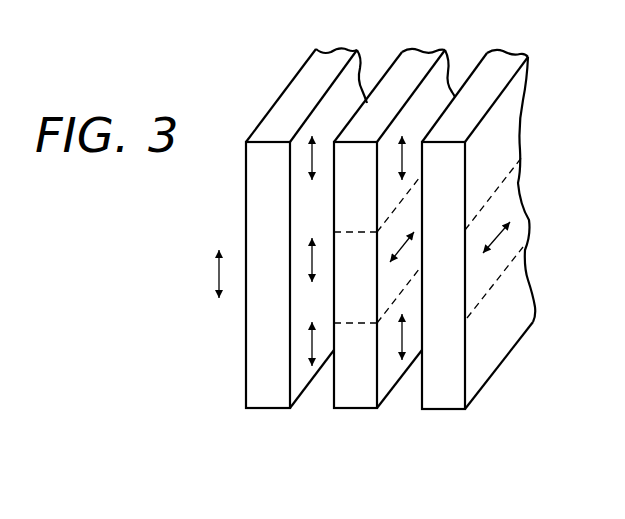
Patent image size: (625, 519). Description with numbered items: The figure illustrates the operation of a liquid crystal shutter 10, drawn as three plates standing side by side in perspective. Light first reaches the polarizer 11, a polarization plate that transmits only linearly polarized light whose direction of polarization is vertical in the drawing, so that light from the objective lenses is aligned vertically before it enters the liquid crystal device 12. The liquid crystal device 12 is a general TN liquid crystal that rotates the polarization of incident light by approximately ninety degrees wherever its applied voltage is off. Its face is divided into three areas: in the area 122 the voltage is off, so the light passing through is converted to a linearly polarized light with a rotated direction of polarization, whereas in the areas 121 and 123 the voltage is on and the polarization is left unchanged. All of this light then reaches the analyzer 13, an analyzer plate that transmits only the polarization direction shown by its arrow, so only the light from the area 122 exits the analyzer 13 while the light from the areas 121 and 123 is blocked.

The piezoelectric device 10 is at (477, 46).
The polarizer 11 is at (273, 391).
The liquid crystal device 12 is at (394, 241).
The area of the liquid crystal device 121 is at (397, 73).
The area of the liquid crystal device 122 is at (390, 290).
The area of the liquid crystal device 123 is at (412, 352).
The analyzer 13 is at (510, 64).